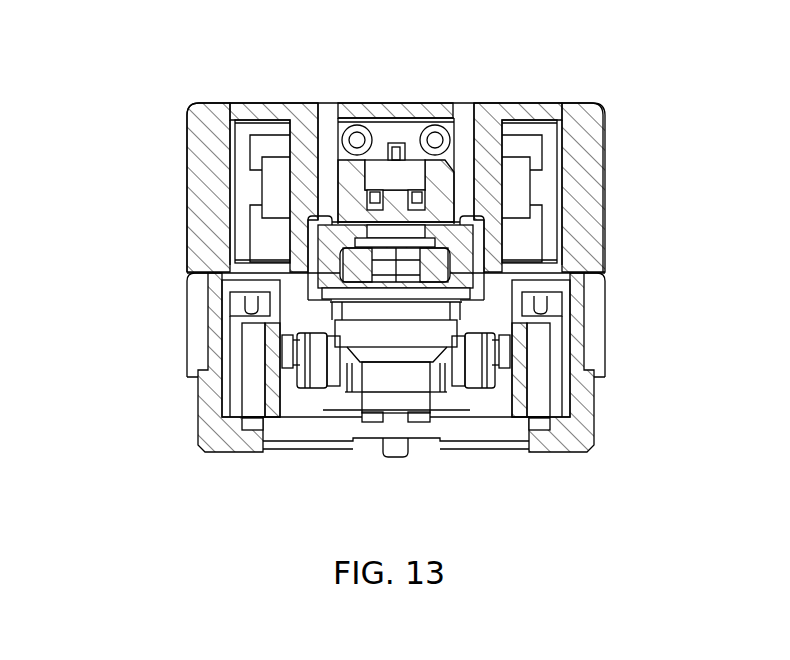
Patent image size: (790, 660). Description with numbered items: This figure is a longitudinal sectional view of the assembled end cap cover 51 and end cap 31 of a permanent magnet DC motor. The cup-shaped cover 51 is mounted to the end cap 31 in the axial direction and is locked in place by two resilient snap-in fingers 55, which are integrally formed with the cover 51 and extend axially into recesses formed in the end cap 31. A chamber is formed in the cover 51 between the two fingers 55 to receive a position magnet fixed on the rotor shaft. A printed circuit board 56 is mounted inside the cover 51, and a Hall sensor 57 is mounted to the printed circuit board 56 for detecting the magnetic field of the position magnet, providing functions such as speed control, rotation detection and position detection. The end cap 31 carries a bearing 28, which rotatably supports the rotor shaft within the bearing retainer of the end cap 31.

The end cap cover 51 is at (200, 155).
The resilient snap-in fingers 55 is at (295, 207).
The printed circuit board 56 is at (388, 130).
The Hall sensor 57 is at (398, 172).
The bearing 28 is at (428, 268).
The end cap 31 is at (208, 393).